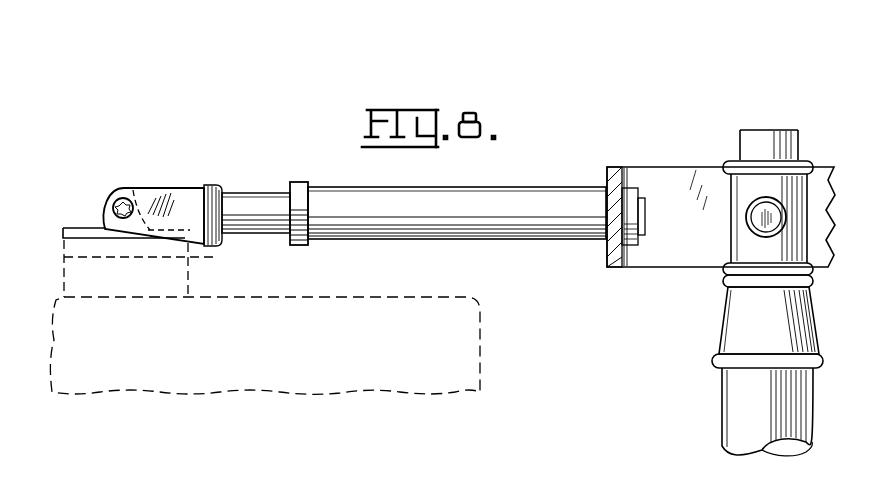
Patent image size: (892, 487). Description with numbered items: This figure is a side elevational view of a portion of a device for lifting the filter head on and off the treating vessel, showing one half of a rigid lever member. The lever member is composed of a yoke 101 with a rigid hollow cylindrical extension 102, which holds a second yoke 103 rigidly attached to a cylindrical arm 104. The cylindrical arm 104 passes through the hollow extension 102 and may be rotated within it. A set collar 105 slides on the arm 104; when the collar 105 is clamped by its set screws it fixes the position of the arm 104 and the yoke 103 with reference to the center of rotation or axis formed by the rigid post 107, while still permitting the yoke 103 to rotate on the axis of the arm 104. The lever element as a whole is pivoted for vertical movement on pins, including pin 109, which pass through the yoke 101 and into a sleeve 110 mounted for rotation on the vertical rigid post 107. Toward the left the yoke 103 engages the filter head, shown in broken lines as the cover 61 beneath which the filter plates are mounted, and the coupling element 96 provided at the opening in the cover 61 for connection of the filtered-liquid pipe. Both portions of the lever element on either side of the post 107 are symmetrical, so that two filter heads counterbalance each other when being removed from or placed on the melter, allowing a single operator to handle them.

The cover 61 is at (482, 335).
The coupling element 96 is at (157, 262).
The yoke 101 is at (651, 257).
The rigid hollow cylindrical extension 102 is at (456, 229).
The yoke 103 is at (175, 198).
The cylindrical arm 104 is at (250, 200).
The set collar 105 is at (298, 190).
The rigid post 107 is at (750, 141).
The pin 109 is at (755, 217).
The sleeve 110 is at (742, 235).